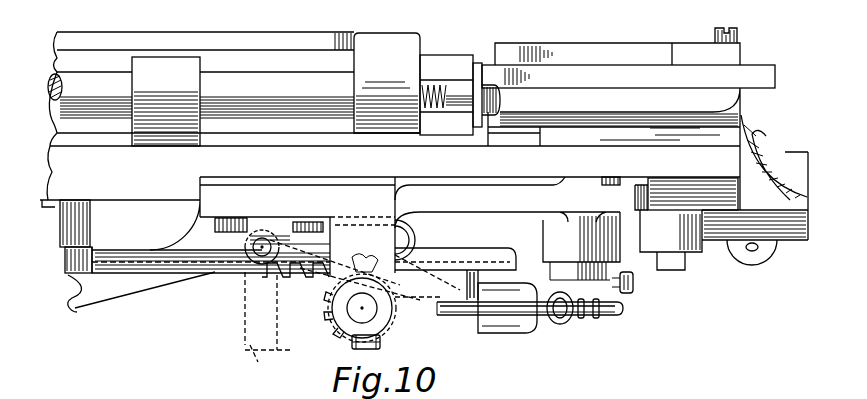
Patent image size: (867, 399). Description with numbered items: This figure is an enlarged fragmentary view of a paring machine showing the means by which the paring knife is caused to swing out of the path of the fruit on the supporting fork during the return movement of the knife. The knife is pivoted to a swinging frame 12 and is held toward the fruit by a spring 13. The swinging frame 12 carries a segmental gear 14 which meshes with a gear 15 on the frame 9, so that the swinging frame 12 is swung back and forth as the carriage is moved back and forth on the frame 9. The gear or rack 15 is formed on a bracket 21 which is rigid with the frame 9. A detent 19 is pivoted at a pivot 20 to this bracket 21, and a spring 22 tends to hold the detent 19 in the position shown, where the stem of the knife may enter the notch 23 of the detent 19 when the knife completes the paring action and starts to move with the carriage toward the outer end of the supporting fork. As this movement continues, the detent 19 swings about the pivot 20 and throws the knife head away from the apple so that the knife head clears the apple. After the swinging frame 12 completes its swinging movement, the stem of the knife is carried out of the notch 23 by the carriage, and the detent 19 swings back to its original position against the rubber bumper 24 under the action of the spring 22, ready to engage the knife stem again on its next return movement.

The frame 9 is at (333, 43).
The swinging frame 12 is at (452, 340).
The spring 13 is at (566, 324).
The segmental gear 14 is at (333, 324).
The gear 15 is at (305, 268).
The detent 19 is at (165, 285).
The pivot 20 is at (258, 262).
The bracket 21 is at (160, 246).
The spring 22 is at (198, 280).
The notch 23 is at (78, 300).
The rubber bumper 24 is at (70, 265).